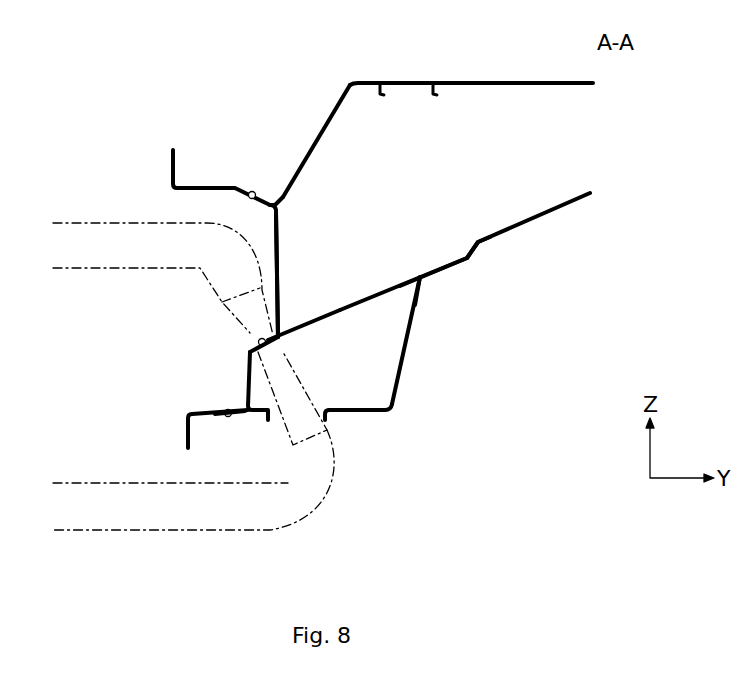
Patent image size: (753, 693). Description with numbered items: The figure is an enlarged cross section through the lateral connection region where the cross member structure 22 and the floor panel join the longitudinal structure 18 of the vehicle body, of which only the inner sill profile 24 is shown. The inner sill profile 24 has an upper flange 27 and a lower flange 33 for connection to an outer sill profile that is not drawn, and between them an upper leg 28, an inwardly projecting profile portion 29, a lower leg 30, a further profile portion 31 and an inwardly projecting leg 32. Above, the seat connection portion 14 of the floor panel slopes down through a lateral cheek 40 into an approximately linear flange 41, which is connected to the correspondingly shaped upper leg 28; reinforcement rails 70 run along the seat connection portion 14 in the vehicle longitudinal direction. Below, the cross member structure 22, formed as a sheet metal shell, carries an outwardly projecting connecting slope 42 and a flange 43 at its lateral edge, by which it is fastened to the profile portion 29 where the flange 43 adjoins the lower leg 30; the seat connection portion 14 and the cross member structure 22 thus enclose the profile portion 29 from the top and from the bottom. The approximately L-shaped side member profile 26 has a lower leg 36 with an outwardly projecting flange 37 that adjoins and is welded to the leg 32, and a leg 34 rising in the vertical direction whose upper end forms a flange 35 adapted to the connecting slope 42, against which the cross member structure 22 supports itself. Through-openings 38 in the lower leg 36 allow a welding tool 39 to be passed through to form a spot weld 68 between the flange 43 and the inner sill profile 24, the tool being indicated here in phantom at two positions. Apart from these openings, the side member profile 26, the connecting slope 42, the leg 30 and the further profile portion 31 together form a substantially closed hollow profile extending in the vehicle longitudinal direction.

The seat connection portion 14 is at (495, 82).
The longitudinal structure 18 is at (238, 458).
The cross member structure 22 is at (549, 212).
The inner sill profile 24 is at (289, 262).
The side member profile 26 is at (392, 407).
The upper flange 27 is at (172, 163).
The upper leg 28 is at (214, 185).
The profile portion 29 is at (280, 296).
The lower leg 30 is at (262, 342).
The further profile portion 31 is at (248, 378).
The leg 32 is at (212, 414).
The lower flange 33 is at (188, 447).
The leg 34 is at (405, 355).
The flange 35 is at (423, 280).
The lower leg 36 is at (372, 413).
The flange 37 is at (228, 417).
The through-openings 38 is at (277, 426).
The welding tool 39 is at (122, 252).
The lateral cheeks 40 is at (307, 166).
The flange 41 is at (274, 200).
The connecting slope 42 is at (447, 266).
The flange 43 is at (280, 345).
The spot weld 68 is at (252, 192).
The reinforcement rails 70 is at (420, 88).